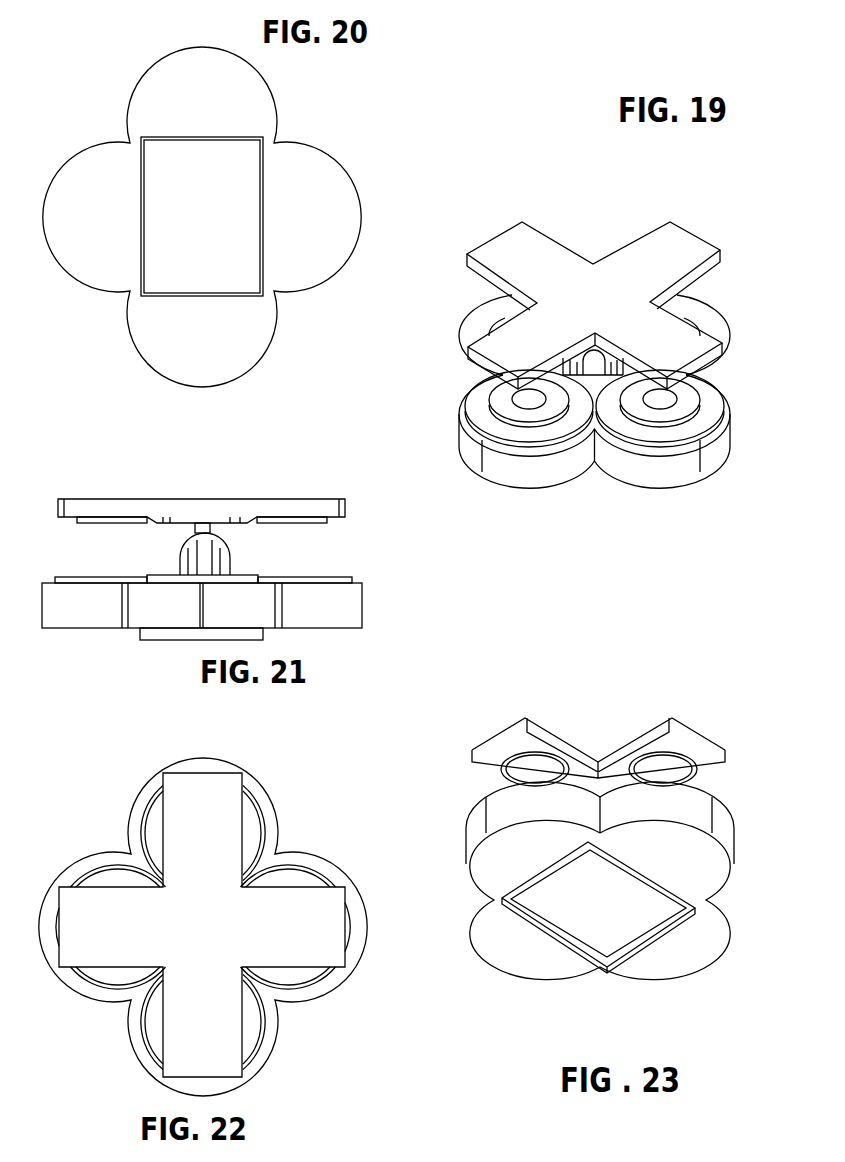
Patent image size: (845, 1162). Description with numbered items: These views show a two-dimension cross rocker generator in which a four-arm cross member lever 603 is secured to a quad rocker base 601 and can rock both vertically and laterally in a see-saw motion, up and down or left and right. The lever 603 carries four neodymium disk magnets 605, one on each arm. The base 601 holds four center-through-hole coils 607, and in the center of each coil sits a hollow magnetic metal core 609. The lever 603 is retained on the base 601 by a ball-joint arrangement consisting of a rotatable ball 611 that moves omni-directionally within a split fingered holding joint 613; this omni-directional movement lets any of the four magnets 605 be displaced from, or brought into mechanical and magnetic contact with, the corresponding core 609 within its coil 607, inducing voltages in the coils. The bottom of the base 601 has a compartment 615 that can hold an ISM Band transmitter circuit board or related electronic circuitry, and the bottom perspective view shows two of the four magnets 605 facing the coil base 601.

In FIG. 20, the base 601 is at (355, 180).
In FIG. 19, the base 601 is at (657, 488).
In FIG. 21, the base 601 is at (362, 608).
In FIG. 22, the base 601 is at (275, 812).
In FIG. 23, the base 601 is at (672, 982).
In FIG. 19, the cross member lever 603 is at (590, 290).
In FIG. 21, the cross member lever 603 is at (163, 497).
In FIG. 22, the cross member lever 603 is at (185, 910).
In FIG. 23, the cross member lever 603 is at (600, 758).
In FIG. 21, the neodymium disk magnets 605 is at (230, 520).
In FIG. 23, the neodymium disk magnets 605 is at (520, 772).
In FIG. 19, the coils 607 is at (483, 312).
In FIG. 22, the coils 607 is at (248, 820).
In FIG. 19, the magnetic metal hollow core 609 is at (508, 310).
In FIG. 21, the rotatable ball 611 is at (202, 537).
In FIG. 21, the split fingered holding joint 613 is at (223, 560).
In FIG. 20, the compartment 615 is at (201, 193).
In FIG. 21, the compartment 615 is at (200, 628).
In FIG. 23, the compartment 615 is at (610, 920).